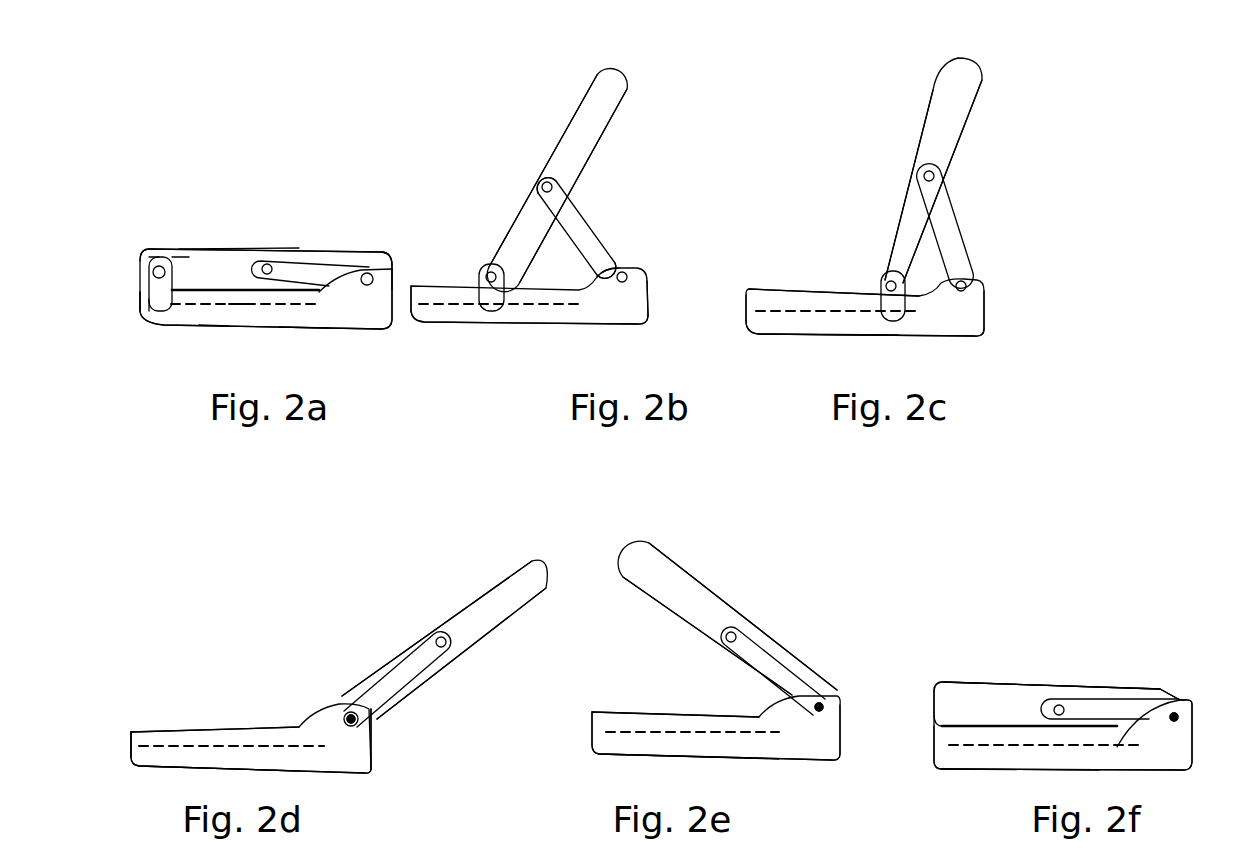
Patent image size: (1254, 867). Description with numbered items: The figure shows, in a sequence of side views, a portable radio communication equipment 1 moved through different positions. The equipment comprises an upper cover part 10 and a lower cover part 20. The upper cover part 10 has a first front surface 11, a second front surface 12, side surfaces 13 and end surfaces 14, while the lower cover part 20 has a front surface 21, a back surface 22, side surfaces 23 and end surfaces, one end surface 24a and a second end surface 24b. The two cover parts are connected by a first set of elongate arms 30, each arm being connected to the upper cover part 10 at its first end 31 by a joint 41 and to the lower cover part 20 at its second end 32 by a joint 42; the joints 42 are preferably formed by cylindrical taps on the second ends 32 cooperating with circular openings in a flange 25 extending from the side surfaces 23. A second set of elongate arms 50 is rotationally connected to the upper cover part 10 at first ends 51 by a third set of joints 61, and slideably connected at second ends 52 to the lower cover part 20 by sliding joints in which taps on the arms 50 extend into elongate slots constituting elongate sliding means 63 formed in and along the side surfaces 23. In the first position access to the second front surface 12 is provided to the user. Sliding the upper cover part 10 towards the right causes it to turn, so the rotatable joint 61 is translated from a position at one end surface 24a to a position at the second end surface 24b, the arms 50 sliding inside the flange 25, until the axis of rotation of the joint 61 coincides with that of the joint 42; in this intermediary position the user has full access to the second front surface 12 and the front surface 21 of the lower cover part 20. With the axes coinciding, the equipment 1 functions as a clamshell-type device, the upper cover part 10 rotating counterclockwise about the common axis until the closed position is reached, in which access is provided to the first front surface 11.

In FIG. 2A, the portable radio communication equipment 1 is at (238, 134).
In FIG. 2B, the portable radio communication equipment 1 is at (487, 112).
In FIG. 2C, the portable radio communication equipment 1 is at (817, 102).
In FIG. 2D, the portable radio communication equipment 1 is at (289, 563).
In FIG. 2E, the portable radio communication equipment 1 is at (789, 544).
In FIG. 2F, the portable radio communication equipment 1 is at (1085, 582).
In FIG. 2A, the upper cover part 10 is at (213, 260).
In FIG. 2B, the upper cover part 10 is at (580, 103).
In FIG. 2C, the upper cover part 10 is at (950, 65).
In FIG. 2D, the upper cover part 10 is at (518, 567).
In FIG. 2E, the upper cover part 10 is at (655, 557).
In FIG. 2F, the upper cover part 10 is at (962, 687).
In FIG. 2B, the first front surface 11 is at (620, 98).
In FIG. 2C, the first front surface 11 is at (968, 100).
In FIG. 2D, the first front surface 11 is at (498, 620).
In FIG. 2E, the first front surface 11 is at (687, 583).
In FIG. 2F, the first front surface 11 is at (997, 690).
In FIG. 2A, the second front surface 12 is at (195, 250).
In FIG. 2B, the second front surface 12 is at (560, 123).
In FIG. 2C, the second front surface 12 is at (927, 100).
In FIG. 2D, the second front surface 12 is at (427, 628).
In FIG. 2E, the second front surface 12 is at (687, 637).
In FIG. 2A, the side surfaces 13 is at (182, 260).
In FIG. 2A, the end surfaces 14 is at (135, 255).
In FIG. 2A, the lower cover part 20 is at (187, 320).
In FIG. 2B, the lower cover part 20 is at (462, 317).
In FIG. 2C, the lower cover part 20 is at (770, 320).
In FIG. 2D, the lower cover part 20 is at (137, 753).
In FIG. 2E, the lower cover part 20 is at (613, 742).
In FIG. 2F, the lower cover part 20 is at (952, 750).
In FIG. 2C, the front surface 21 is at (782, 293).
In FIG. 2D, the front surface 21 is at (202, 730).
In FIG. 2E, the front surface 21 is at (627, 713).
In FIG. 2A, the back surface 22 is at (308, 328).
In FIG. 2C, the back surface 22 is at (815, 330).
In FIG. 2D, the back surface 22 is at (180, 770).
In FIG. 2E, the back surface 22 is at (667, 760).
In FIG. 2F, the back surface 22 is at (1007, 770).
In FIG. 2A, the side surfaces 23 is at (212, 317).
In FIG. 2A, the end surface 24a is at (140, 302).
In FIG. 2B, the end surface 24a is at (413, 300).
In FIG. 2C, the end surface 24a is at (748, 305).
In FIG. 2D, the end surface 24a is at (128, 745).
In FIG. 2B, the second end surface 24b is at (648, 305).
In FIG. 2C, the second end surface 24b is at (985, 303).
In FIG. 2D, the second end surface 24b is at (380, 757).
In FIG. 2B, the flange 25 is at (608, 267).
In FIG. 2A, the first set of elongate arms 30 is at (323, 257).
In FIG. 2B, the first set of elongate arms 30 is at (585, 222).
In FIG. 2C, the first set of elongate arms 30 is at (950, 223).
In FIG. 2D, the first set of elongate arms 30 is at (408, 677).
In FIG. 2E, the first set of elongate arms 30 is at (793, 653).
In FIG. 2F, the first set of elongate arms 30 is at (1107, 703).
In FIG. 2B, the first ends 31 is at (538, 170).
In FIG. 2B, the second end 32 is at (617, 255).
In FIG. 2A, the joints 41 is at (268, 262).
In FIG. 2B, the joints 41 is at (557, 180).
In FIG. 2C, the joints 41 is at (940, 175).
In FIG. 2D, the joints 41 is at (450, 647).
In FIG. 2E, the joints 41 is at (737, 630).
In FIG. 2F, the joints 41 is at (1057, 702).
In FIG. 2A, the joints 42 is at (368, 272).
In FIG. 2B, the joints 42 is at (630, 270).
In FIG. 2C, the joints 42 is at (970, 285).
In FIG. 2D, the joints 42 is at (357, 727).
In FIG. 2E, the joints 42 is at (843, 703).
In FIG. 2F, the joints 42 is at (1182, 703).
In FIG. 2A, the second set of elongate arms 50 is at (148, 288).
In FIG. 2B, the second set of elongate arms 50 is at (482, 280).
In FIG. 2C, the second set of elongate arms 50 is at (883, 297).
In FIG. 2A, the first ends 51 is at (158, 260).
In FIG. 2A, the second end 52 is at (160, 307).
In FIG. 2A, the third set of joints 61 is at (147, 270).
In FIG. 2B, the third set of joints 61 is at (492, 260).
In FIG. 2C, the third set of joints 61 is at (893, 280).
In FIG. 2D, the third set of joints 61 is at (357, 727).
In FIG. 2E, the third set of joints 61 is at (843, 703).
In FIG. 2F, the third set of joints 61 is at (1182, 703).
In FIG. 2A, the elongate sliding means 63 is at (238, 310).